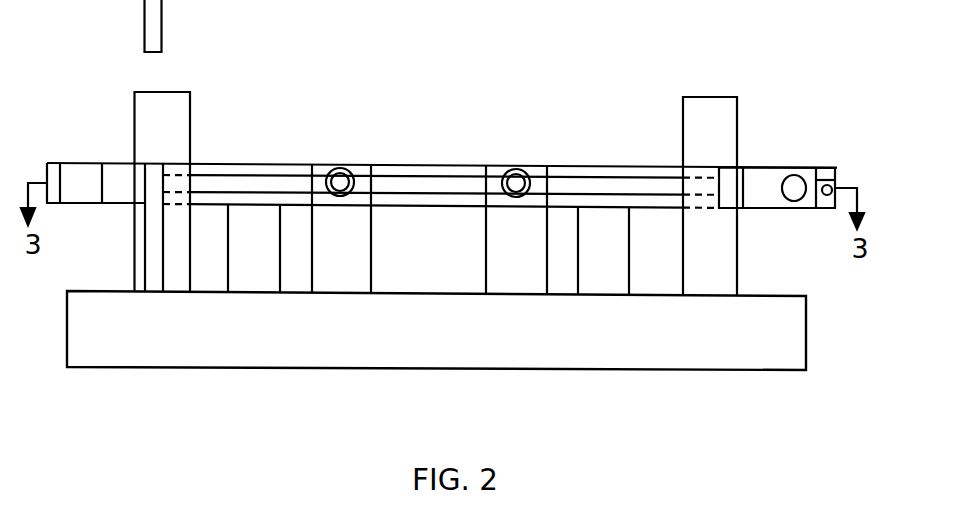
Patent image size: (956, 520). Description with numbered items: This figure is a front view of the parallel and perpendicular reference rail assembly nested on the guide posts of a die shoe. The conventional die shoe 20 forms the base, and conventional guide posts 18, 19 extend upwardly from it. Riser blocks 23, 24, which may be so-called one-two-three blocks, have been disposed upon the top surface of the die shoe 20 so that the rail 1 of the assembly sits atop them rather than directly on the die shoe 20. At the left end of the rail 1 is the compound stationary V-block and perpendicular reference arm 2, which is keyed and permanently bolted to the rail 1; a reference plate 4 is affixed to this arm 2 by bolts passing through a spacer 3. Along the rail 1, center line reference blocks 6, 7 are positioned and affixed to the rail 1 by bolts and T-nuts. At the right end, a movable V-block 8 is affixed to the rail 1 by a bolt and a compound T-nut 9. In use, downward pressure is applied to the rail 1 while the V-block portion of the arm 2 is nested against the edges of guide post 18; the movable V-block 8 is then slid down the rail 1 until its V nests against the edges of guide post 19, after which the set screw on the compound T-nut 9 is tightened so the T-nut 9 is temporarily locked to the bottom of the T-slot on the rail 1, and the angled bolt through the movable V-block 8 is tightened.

The rail 1 is at (442, 172).
The compound stationary V-block and perpendicular reference arm 2 is at (82, 187).
The spacer 3 is at (132, 173).
The reference plate 4 is at (152, 193).
The center line reference block 6 is at (342, 215).
The center line reference block 7 is at (517, 213).
The movable V-block 8 is at (761, 185).
The compound T-nut 9 is at (825, 195).
The guide post 18 is at (168, 117).
The guide post 19 is at (712, 119).
The die shoe 20 is at (256, 329).
The riser block 23 is at (252, 228).
The riser block 24 is at (605, 258).